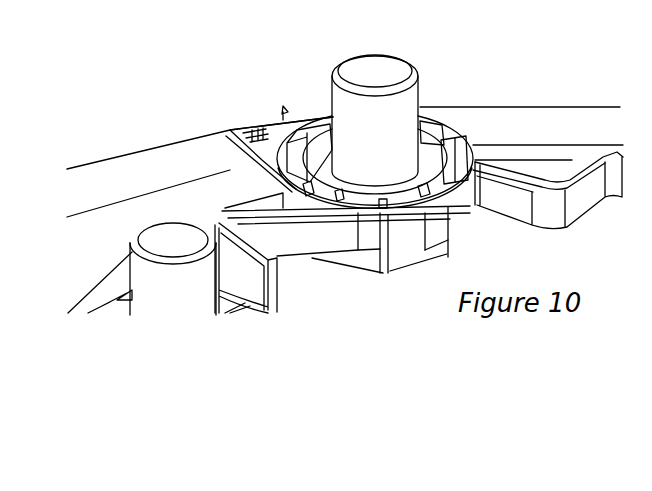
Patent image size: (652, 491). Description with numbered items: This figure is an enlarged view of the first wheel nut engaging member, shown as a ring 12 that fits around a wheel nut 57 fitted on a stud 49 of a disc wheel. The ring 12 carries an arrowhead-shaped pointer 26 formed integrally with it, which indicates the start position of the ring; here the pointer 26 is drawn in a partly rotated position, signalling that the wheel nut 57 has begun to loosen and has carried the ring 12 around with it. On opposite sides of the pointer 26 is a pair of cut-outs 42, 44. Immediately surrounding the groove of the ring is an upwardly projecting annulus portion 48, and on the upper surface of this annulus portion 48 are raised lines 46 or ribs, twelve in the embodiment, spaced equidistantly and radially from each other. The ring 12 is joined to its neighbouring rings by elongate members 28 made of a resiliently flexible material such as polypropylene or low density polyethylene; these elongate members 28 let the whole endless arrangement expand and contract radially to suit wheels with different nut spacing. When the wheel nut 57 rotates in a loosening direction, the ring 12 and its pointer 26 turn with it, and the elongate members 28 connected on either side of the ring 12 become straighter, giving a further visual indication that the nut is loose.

The wheel nut engaging member 12 is at (410, 238).
The pointer 26 is at (237, 127).
The elongate member 28 is at (222, 227).
The cut-out 42 is at (232, 166).
The cut-out 44 is at (284, 108).
The raised line 46 is at (448, 133).
The annulus portion 48 is at (461, 138).
The stud 49 is at (418, 97).
The wheel nut 57 is at (363, 268).